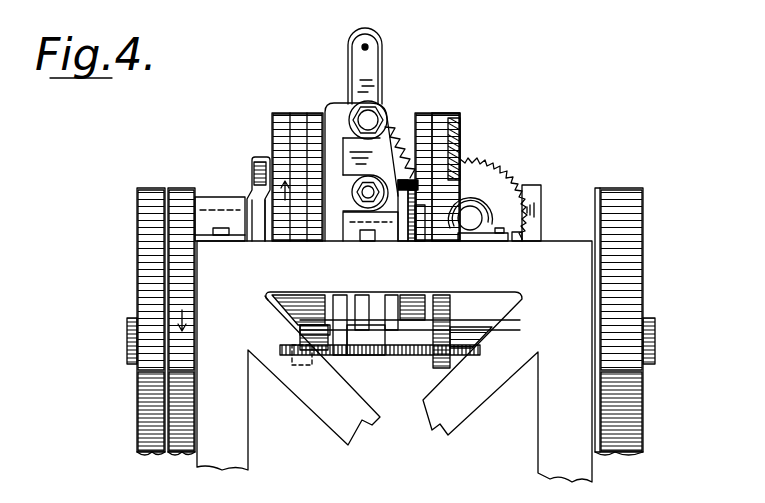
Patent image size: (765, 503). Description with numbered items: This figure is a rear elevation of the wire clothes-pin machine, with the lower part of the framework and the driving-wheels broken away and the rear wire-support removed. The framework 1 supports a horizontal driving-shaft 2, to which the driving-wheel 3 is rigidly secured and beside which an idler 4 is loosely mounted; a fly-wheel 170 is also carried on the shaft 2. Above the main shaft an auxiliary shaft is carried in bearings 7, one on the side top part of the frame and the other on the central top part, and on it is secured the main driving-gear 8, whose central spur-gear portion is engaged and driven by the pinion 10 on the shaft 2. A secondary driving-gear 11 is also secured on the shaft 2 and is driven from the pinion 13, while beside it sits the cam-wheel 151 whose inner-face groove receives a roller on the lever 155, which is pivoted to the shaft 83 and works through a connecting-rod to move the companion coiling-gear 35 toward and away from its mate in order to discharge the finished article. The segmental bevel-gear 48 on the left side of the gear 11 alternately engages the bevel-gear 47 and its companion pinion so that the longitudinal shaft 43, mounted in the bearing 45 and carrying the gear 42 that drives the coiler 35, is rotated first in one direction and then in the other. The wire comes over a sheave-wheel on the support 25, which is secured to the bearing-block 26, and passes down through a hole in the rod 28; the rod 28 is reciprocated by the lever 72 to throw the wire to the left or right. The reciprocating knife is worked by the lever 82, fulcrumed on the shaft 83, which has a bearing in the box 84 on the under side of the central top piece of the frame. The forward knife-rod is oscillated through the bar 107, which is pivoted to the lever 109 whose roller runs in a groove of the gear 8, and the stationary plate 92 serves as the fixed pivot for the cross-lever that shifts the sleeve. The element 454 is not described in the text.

The framework 1 is at (394, 361).
The driving-shaft 2 is at (468, 330).
The driving-wheel 3 is at (183, 453).
The idler 4 is at (150, 453).
The bearings 7 is at (212, 200).
The main driving-gear 8 is at (300, 114).
The pinion 10 is at (298, 325).
The secondary driving-gear 11 is at (448, 114).
The pinion 13 is at (443, 362).
The support 25 is at (380, 32).
The bearing-block 26 is at (366, 169).
The rod 28 is at (380, 115).
The companion gear-wheel 35 is at (400, 149).
The gear 42 is at (497, 175).
The shaft 43 is at (468, 226).
The bearing 45 is at (496, 236).
The bevel-gear 47 is at (492, 214).
The segmental bevel-gear 48 is at (461, 145).
The lever 72 is at (361, 172).
The lever 82 is at (346, 364).
The shaft 83 is at (300, 340).
The box 84 is at (368, 320).
The stationary plate 92 is at (538, 199).
The bar 107 is at (257, 157).
The lever 109 is at (249, 163).
The cam-wheel 151 is at (428, 112).
The lever 155 is at (405, 236).
The fly-wheel 170 is at (644, 279).
The bar 454 is at (422, 223).